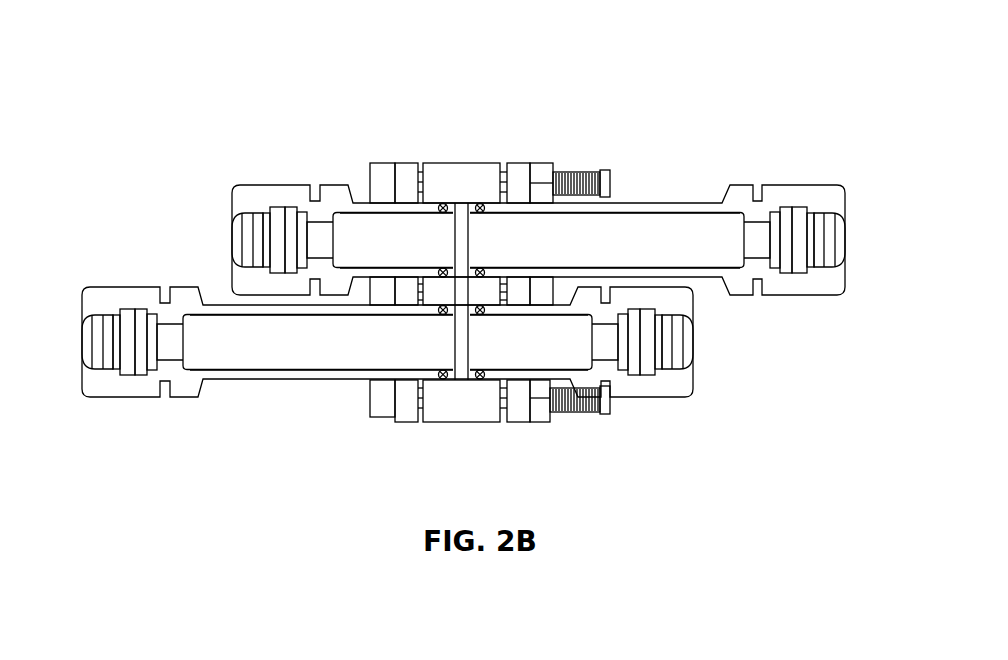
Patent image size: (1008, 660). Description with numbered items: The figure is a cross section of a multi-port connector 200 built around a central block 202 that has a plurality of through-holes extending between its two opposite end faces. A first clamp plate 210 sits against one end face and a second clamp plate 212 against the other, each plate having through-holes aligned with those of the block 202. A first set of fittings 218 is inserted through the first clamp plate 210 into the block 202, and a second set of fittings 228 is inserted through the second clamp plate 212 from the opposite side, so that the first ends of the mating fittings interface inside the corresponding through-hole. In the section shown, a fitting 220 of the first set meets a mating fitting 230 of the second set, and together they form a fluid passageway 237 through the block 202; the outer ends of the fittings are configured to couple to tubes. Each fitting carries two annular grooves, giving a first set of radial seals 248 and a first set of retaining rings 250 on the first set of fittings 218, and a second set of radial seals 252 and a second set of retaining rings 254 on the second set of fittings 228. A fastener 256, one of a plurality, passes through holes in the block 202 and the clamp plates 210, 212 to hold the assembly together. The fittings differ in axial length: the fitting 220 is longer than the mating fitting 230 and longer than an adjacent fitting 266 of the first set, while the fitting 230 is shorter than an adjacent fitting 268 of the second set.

The multi-port connector 200 is at (463, 249).
The block 202 is at (455, 163).
The first clamp plate 210 is at (518, 163).
The second clamp plate 212 is at (402, 162).
The first set of fittings 218 is at (708, 298).
The fitting 220 is at (668, 201).
The second set of fittings 228 is at (213, 243).
The fitting 230 is at (337, 212).
The fluid passageway 237 is at (358, 238).
The first set of radial seals 248 is at (480, 384).
The first set of retaining rings 250 is at (503, 190).
The second set of radial seals 252 is at (443, 384).
The second set of retaining rings 254 is at (420, 178).
The fastener 256 is at (582, 172).
The fitting 266 is at (593, 378).
The fitting 268 is at (270, 380).